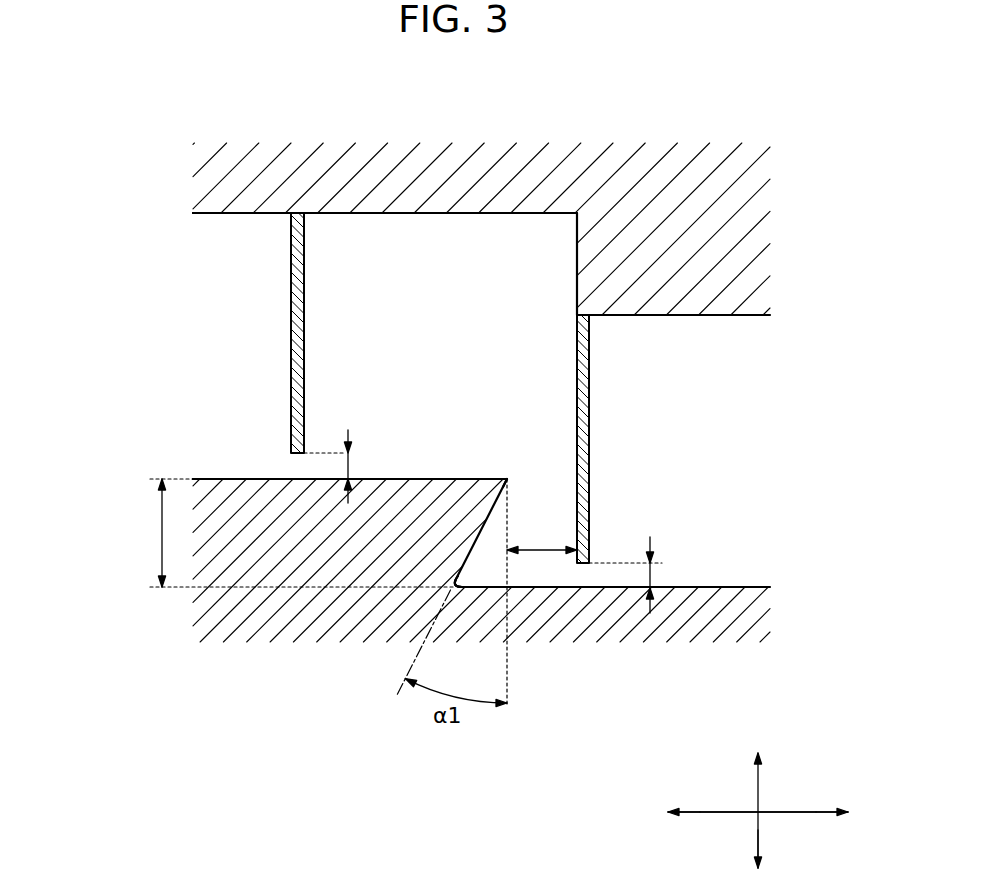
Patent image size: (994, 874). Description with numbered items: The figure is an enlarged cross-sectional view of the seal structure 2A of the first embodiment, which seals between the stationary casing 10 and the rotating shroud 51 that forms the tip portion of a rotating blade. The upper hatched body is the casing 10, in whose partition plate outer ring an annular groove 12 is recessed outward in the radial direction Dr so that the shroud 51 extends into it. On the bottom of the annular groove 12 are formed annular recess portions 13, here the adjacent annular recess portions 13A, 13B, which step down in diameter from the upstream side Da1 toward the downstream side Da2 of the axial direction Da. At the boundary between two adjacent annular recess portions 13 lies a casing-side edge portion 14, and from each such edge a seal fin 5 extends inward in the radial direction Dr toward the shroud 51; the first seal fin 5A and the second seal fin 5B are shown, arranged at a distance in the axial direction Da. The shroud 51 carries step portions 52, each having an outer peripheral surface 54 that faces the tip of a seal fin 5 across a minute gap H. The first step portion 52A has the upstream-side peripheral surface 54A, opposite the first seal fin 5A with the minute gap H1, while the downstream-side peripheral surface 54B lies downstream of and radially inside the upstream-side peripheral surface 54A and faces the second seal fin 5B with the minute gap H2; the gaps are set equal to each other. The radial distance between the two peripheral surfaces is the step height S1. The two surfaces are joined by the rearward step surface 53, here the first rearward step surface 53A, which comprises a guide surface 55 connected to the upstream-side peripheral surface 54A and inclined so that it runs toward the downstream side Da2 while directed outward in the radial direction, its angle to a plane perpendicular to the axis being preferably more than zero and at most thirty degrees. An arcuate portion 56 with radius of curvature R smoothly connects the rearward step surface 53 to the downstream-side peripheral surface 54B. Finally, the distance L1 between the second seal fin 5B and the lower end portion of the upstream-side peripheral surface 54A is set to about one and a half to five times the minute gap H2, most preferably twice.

The seal structure 2A is at (183, 388).
The casing 10 is at (166, 211).
The annular groove 12 is at (160, 288).
The annular recess portion 13 is at (539, 218).
The annular recess portion 13A is at (236, 216).
The annular recess portion 13B is at (737, 317).
The casing-side edge portion 14 is at (577, 315).
The seal fin 5 is at (489, 388).
The first seal fin 5A is at (304, 312).
The second seal fin 5B is at (589, 368).
The shroud 51 is at (753, 617).
The step portion 52 is at (350, 595).
The first step portion 52A is at (312, 495).
The rearward step surface 53 is at (585, 517).
The first rearward step surface 53A is at (500, 517).
The outer peripheral surface 54 is at (410, 574).
The upstream-side peripheral surface 54A is at (228, 478).
The downstream-side peripheral surface 54B is at (697, 587).
The guide surface 55 is at (508, 483).
The arcuate portion 56 is at (473, 586).
The radius of curvature R is at (463, 575).
The minute gap H is at (528, 509).
The minute gap H1 is at (352, 465).
The minute gap H2 is at (655, 573).
The height of the first step portion S1 is at (292, 533).
The distance L1 is at (542, 592).
The axial direction Da is at (808, 810).
The upstream side Da1 is at (661, 814).
The downstream side Da2 is at (857, 814).
The radial direction Dr is at (756, 838).